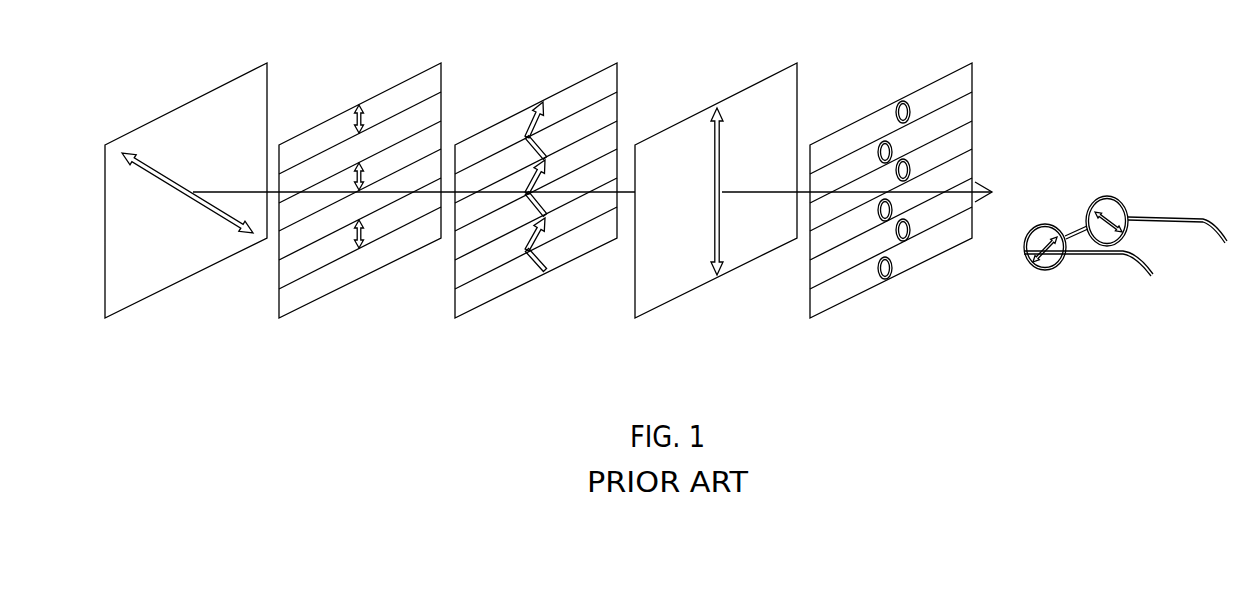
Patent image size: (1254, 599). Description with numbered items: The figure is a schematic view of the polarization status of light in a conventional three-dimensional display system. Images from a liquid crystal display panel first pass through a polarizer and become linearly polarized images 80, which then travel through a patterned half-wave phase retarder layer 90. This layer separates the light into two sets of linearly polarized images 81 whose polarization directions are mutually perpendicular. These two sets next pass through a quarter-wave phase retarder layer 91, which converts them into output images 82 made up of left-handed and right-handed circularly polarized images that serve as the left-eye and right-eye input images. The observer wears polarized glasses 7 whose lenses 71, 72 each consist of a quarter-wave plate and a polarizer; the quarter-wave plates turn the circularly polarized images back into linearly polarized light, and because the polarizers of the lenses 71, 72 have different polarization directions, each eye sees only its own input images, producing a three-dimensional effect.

The linearly polarized images 80 is at (128, 132).
The patterned half-wave phase retarder layer 90 is at (322, 122).
The two sets of linearly polarized images 81 is at (487, 125).
The quarter-wave phase retarder layer 91 is at (660, 130).
The output images 82 is at (835, 130).
The polarized glasses 7 is at (1125, 163).
The lens 71 is at (1107, 197).
The lens 72 is at (1043, 222).